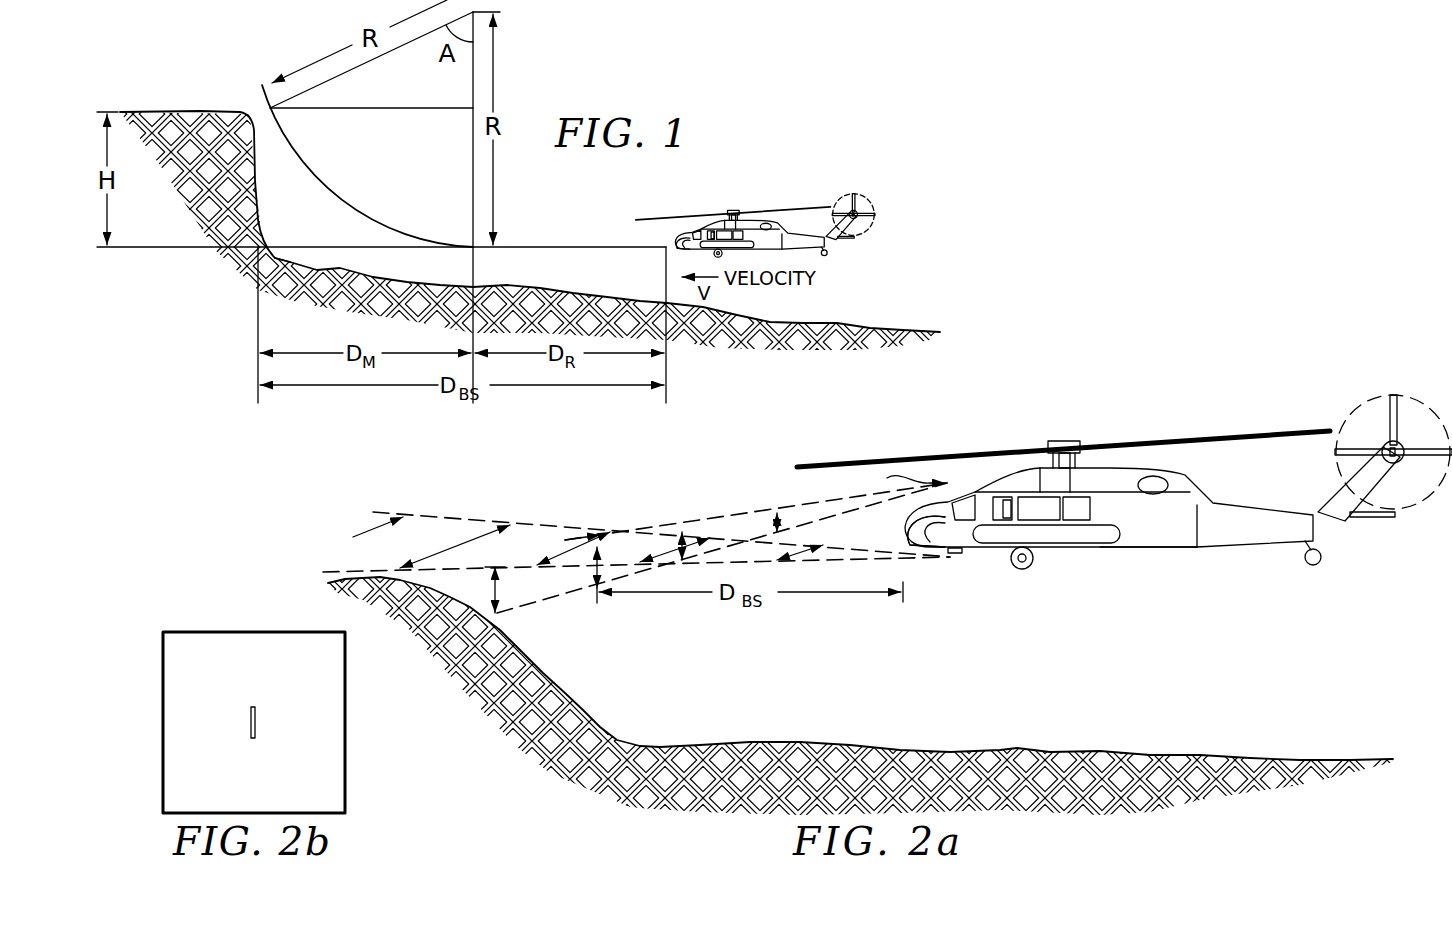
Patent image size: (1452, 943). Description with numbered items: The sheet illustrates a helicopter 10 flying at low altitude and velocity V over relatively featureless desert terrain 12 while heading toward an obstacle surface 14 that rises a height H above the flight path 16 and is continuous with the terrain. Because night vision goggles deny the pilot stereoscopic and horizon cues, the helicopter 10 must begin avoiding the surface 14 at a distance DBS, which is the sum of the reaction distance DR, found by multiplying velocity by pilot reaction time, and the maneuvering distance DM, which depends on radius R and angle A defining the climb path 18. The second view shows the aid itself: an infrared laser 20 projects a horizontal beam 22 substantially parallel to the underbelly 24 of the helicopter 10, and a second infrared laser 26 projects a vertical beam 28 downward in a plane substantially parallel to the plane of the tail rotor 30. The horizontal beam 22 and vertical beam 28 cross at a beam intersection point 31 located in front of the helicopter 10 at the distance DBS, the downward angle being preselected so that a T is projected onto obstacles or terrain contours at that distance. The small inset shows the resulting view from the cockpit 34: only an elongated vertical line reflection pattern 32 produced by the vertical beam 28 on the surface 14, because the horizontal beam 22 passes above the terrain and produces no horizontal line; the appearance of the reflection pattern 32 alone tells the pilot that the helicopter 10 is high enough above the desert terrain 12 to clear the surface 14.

In FIG. 1, the helicopter 10 is at (790, 210).
In FIG. 2A, the helicopter 10 is at (1124, 479).
In FIG. 1, the desert terrain 12 is at (587, 295).
In FIG. 2A, the desert terrain 12 is at (1058, 750).
In FIG. 1, the surface 14 is at (258, 190).
In FIG. 2A, the surface 14 is at (510, 640).
In FIG. 1, the flight path 16 is at (563, 247).
In FIG. 1, the climb path 18 is at (338, 201).
In FIG. 2A, the infrared laser 20 is at (960, 558).
In FIG. 2A, the horizontal beam 22 is at (543, 523).
In FIG. 2A, the underbelly 24 is at (1168, 549).
In FIG. 2A, the infrared laser 26 is at (900, 478).
In FIG. 2A, the vertical beam 28 is at (747, 517).
In FIG. 2A, the tail rotor 30 is at (1375, 393).
In FIG. 2A, the beam intersection point 31 is at (673, 531).
In FIG. 2B, the vertical line reflection pattern 32 is at (250, 720).
In FIG. 2A, the cockpit 34 is at (905, 520).